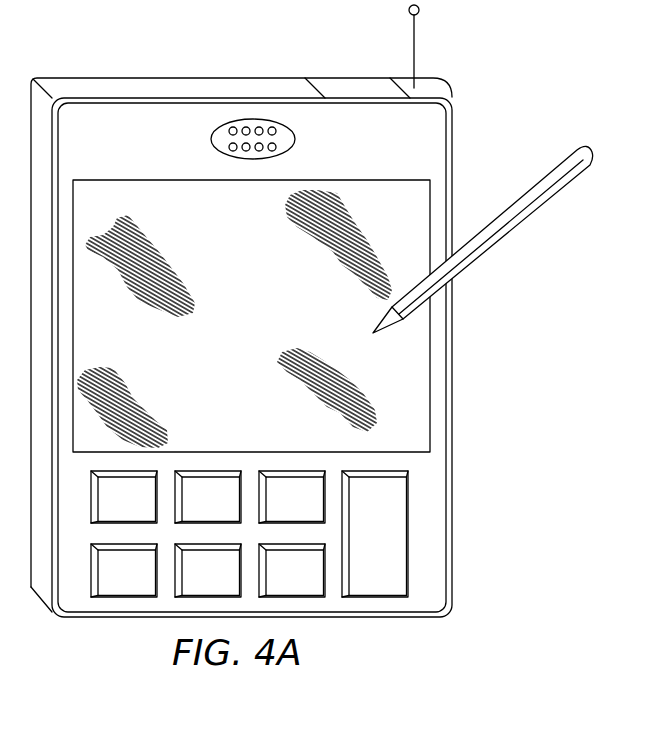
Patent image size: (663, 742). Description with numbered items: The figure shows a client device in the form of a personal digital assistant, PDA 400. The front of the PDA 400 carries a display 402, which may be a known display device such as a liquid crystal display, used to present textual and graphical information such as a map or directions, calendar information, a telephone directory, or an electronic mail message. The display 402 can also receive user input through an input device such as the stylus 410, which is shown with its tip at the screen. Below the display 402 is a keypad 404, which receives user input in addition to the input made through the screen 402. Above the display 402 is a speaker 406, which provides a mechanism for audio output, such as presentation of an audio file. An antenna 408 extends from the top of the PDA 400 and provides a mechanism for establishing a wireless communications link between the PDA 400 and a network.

The PDA 400 is at (452, 177).
The display 402 is at (274, 316).
The keypad 404 is at (457, 468).
The speaker 406 is at (295, 139).
The antenna 408 is at (415, 50).
The stylus 410 is at (593, 157).